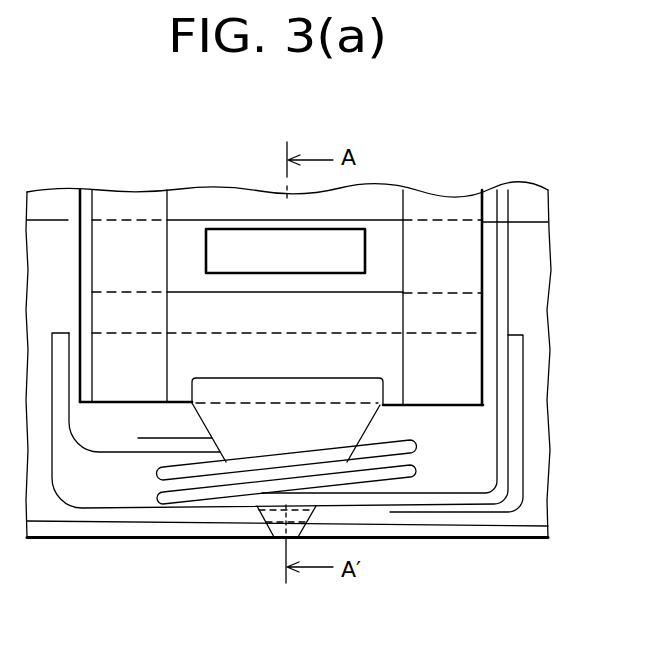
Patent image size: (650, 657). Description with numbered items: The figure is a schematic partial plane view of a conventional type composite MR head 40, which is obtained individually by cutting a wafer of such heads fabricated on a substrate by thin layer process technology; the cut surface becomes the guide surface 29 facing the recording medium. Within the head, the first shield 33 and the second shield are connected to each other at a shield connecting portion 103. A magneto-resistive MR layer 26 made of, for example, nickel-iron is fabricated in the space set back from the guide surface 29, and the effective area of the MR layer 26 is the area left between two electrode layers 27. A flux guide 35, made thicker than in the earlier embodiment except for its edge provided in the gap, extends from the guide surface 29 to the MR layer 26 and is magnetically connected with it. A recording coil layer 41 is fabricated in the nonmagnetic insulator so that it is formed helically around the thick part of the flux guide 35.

The composite MR head 40 is at (543, 181).
The electrode layers 27 is at (152, 193).
The shield connecting portion 103 is at (206, 250).
The MR layer 26 is at (177, 405).
The flux guide 35 is at (337, 433).
The recording coil layer 41 is at (410, 440).
The first shield 33 is at (147, 522).
The guide surface 29 is at (383, 541).